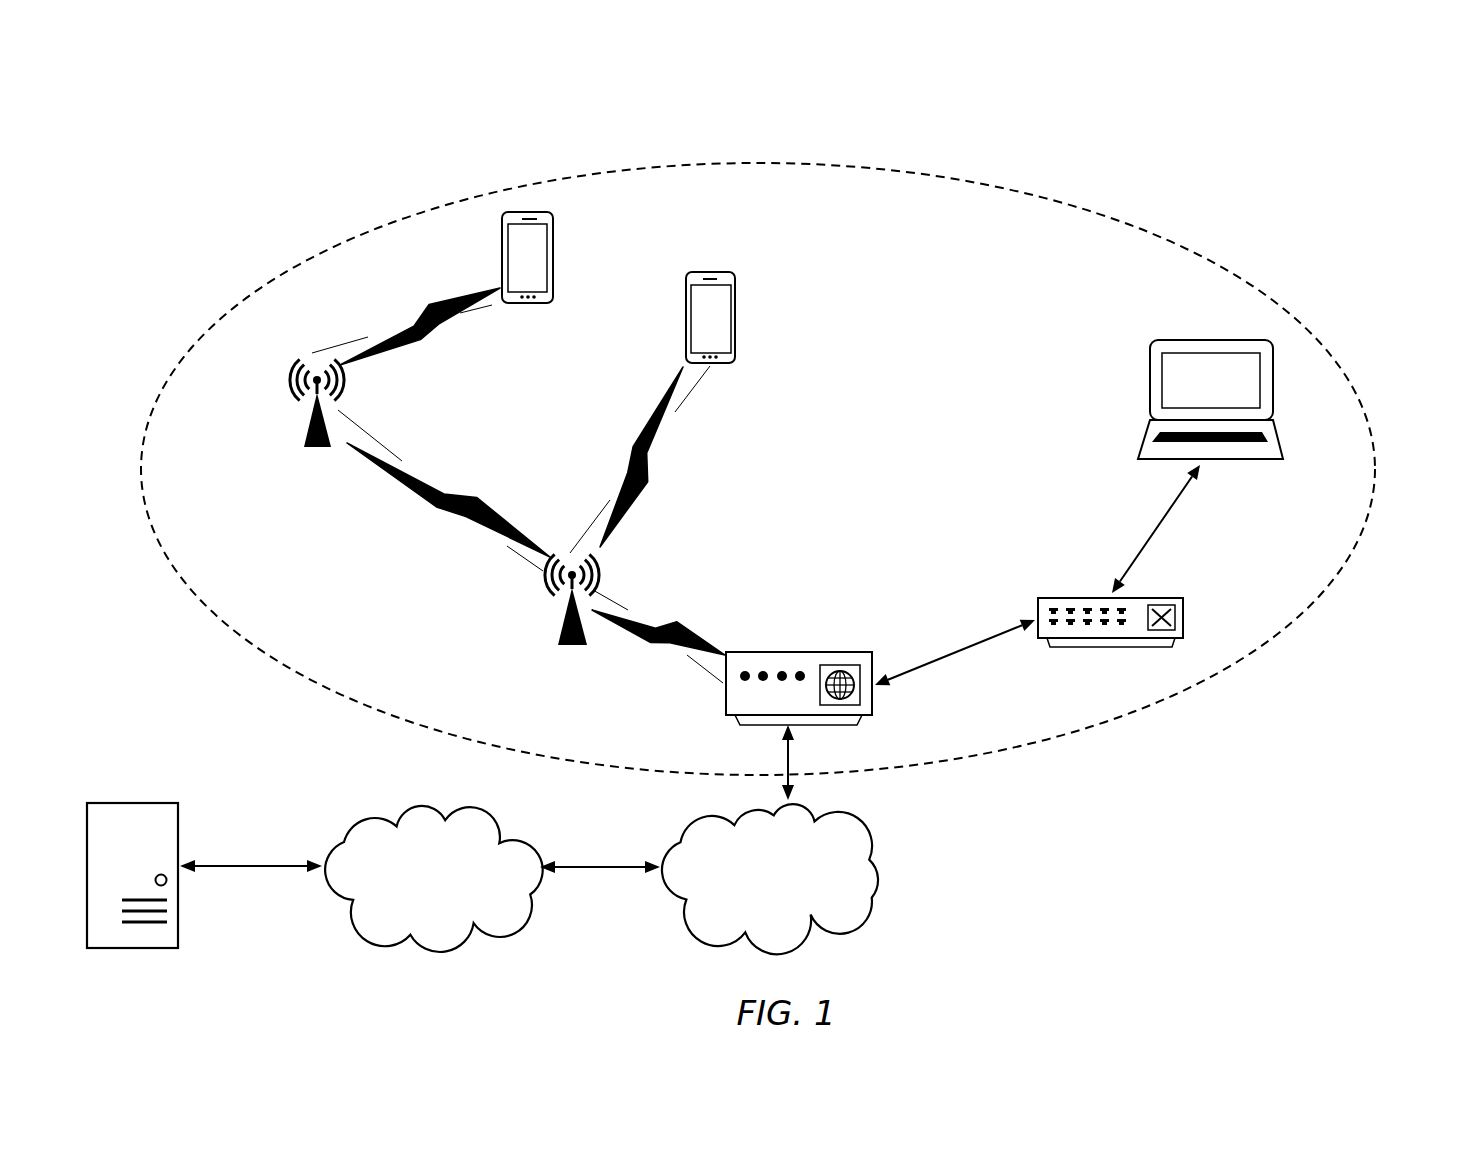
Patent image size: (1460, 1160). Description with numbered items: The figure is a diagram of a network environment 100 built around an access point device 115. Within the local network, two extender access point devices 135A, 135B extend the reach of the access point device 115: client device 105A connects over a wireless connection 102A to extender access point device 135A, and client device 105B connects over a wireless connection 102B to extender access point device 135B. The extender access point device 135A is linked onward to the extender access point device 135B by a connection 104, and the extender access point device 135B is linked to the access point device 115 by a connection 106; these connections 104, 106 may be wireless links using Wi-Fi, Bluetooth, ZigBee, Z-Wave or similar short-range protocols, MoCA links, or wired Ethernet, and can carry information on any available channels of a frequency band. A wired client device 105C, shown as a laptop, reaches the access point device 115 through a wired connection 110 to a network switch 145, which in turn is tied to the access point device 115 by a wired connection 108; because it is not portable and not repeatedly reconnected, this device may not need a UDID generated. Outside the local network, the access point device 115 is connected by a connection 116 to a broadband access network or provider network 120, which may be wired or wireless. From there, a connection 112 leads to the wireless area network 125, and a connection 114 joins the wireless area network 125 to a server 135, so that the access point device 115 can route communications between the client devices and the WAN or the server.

The network environment 100 is at (1368, 156).
The wired connection 110 is at (232, 307).
The wireless connection 102A is at (403, 317).
The wireless connection 102B is at (632, 452).
The connection 104 is at (467, 491).
The connection 106 is at (667, 616).
The wired connection 108 is at (973, 640).
The connection 112 is at (630, 867).
The connection 114 is at (278, 867).
The connection 116 is at (786, 770).
The client device 105A is at (503, 255).
The client device 105B is at (687, 315).
The client device 105C is at (1185, 345).
The access point device 115 is at (738, 648).
The provider network 120 is at (770, 879).
The wireless area network 125 is at (434, 879).
The server 135 is at (132, 805).
The extender access point device 135A is at (305, 448).
The extender access point device 135B is at (558, 645).
The network switch 145 is at (1053, 600).